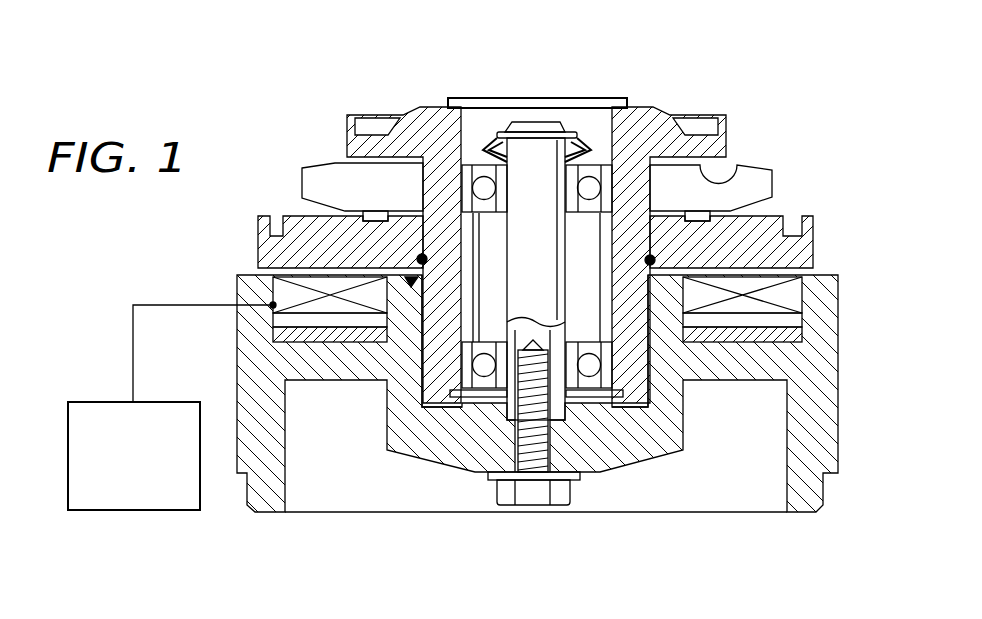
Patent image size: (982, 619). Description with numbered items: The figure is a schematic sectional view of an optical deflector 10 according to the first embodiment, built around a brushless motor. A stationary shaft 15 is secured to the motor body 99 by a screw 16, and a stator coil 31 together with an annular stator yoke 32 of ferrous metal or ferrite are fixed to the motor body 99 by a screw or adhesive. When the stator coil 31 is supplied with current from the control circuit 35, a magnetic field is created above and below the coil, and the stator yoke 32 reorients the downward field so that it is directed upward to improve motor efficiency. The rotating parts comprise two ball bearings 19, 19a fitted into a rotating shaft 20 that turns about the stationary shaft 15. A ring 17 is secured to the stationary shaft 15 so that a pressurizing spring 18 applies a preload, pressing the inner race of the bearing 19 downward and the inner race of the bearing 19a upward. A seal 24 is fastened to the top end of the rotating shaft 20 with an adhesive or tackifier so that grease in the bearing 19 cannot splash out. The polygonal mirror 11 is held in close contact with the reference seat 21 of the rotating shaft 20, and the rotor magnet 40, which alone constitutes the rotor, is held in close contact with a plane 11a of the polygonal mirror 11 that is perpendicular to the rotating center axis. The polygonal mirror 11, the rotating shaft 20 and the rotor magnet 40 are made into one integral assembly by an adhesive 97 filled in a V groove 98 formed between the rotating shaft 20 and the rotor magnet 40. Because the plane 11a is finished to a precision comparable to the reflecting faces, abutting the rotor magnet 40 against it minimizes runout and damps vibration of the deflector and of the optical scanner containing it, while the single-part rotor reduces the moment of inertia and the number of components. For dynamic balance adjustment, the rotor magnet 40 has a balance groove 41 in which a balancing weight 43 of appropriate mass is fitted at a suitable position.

The spindle motor 10 is at (635, 90).
The polygonal mirror 11 is at (765, 163).
The plane of the polygonal mirror 11a is at (777, 219).
The stationary shaft 15 is at (523, 155).
The screw 16 is at (560, 494).
The ring 17 is at (575, 138).
The pressurizing spring 18 is at (588, 145).
The ball bearing 19 is at (462, 180).
The ball bearing 19a is at (447, 396).
The rotating shaft 20 is at (652, 107).
The reference seat 21 is at (742, 163).
The seal 24 is at (555, 98).
The stator coil 31 is at (793, 295).
The annular stator yoke 32 is at (797, 333).
The control circuit 35 is at (187, 400).
The rotor magnet 40 is at (817, 222).
The balance groove 41 is at (283, 222).
The balancing weight 43 is at (793, 221).
The adhesive 97 is at (273, 278).
The V groove 98 is at (418, 256).
The motor body 99 is at (646, 466).